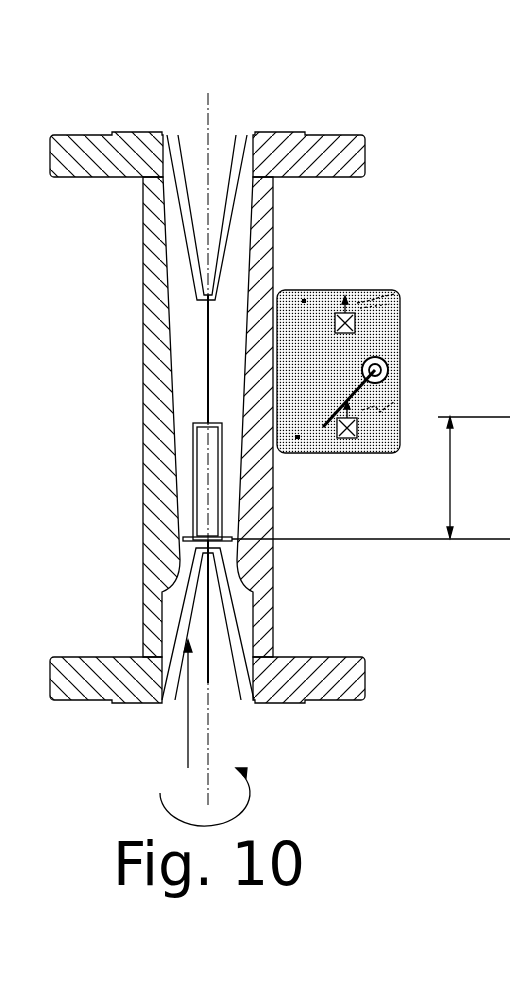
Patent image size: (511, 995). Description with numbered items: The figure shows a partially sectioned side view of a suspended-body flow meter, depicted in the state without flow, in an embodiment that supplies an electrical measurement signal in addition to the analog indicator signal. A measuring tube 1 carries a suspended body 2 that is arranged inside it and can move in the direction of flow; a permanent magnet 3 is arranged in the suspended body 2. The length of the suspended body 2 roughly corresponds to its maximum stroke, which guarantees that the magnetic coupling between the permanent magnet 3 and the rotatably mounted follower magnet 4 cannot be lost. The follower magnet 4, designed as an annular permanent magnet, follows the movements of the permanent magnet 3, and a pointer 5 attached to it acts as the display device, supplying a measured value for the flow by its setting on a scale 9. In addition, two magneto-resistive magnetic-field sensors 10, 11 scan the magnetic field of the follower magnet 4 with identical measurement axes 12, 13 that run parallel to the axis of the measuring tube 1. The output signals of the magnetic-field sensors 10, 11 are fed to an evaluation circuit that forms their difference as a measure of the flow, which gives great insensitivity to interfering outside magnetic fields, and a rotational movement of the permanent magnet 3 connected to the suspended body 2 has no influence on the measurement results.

The measuring tube 1 is at (308, 137).
The suspended body 2 is at (220, 510).
The permanent magnet 3 is at (203, 470).
The follower magnet 4 is at (390, 362).
The pointer 5 is at (400, 403).
The scale 9 is at (311, 303).
The magnetic-field sensor 10 is at (400, 295).
The magnetic-field sensor 11 is at (360, 437).
The measurement axis 12 is at (348, 298).
The measurement axis 13 is at (343, 437).